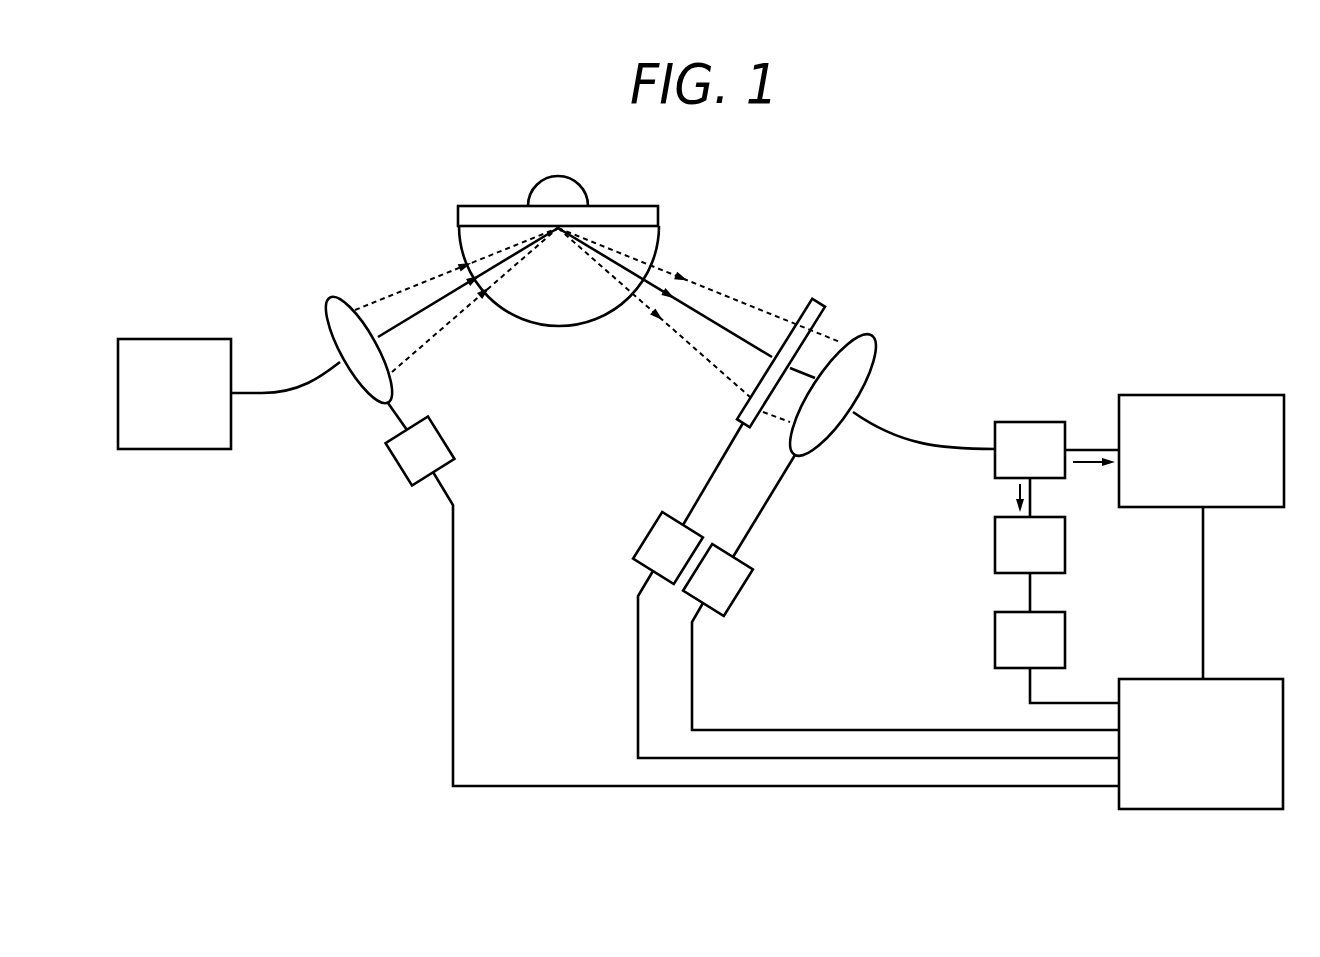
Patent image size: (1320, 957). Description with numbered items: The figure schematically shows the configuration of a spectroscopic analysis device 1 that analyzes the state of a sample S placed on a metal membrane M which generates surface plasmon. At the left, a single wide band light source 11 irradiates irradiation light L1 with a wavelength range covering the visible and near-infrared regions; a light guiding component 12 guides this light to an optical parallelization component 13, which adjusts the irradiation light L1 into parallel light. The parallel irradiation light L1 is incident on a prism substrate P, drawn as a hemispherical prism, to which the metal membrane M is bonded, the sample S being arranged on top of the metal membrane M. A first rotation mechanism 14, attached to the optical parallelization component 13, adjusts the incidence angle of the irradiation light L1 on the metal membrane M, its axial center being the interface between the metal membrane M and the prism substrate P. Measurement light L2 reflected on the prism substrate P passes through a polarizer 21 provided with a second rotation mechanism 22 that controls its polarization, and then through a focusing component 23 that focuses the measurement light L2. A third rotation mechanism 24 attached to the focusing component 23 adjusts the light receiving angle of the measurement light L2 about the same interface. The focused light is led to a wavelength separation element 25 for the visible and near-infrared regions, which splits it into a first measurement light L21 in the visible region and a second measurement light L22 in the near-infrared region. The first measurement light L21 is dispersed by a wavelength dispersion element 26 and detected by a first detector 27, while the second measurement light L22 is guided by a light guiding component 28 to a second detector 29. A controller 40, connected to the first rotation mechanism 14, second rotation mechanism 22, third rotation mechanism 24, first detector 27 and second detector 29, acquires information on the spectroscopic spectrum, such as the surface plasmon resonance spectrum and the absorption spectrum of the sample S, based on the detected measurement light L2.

The spectroscopic analysis device 1 is at (665, 851).
The wide band light source 11 is at (173, 339).
The light guiding component 12 is at (273, 395).
The optical parallelization component 13 is at (327, 302).
The first rotation mechanism 14 is at (398, 470).
The metal membrane M is at (488, 206).
The sample S is at (588, 204).
The prism substrate P is at (558, 312).
The irradiation light L1 is at (410, 320).
The measurement light L2 is at (643, 278).
The polarizer 21 is at (823, 303).
The second rotation mechanism 22 is at (645, 530).
The focusing component 23 is at (868, 335).
The third rotation mechanism 24 is at (742, 595).
The wavelength separation element 25 is at (995, 462).
The wavelength dispersion element 26 is at (1065, 545).
The first detector 27 is at (995, 640).
The light guiding component 28 is at (1090, 450).
The second detector 29 is at (1230, 507).
The controller 40 is at (1203, 809).
The first measurement light L21 is at (1002, 498).
The second measurement light L22 is at (1094, 475).